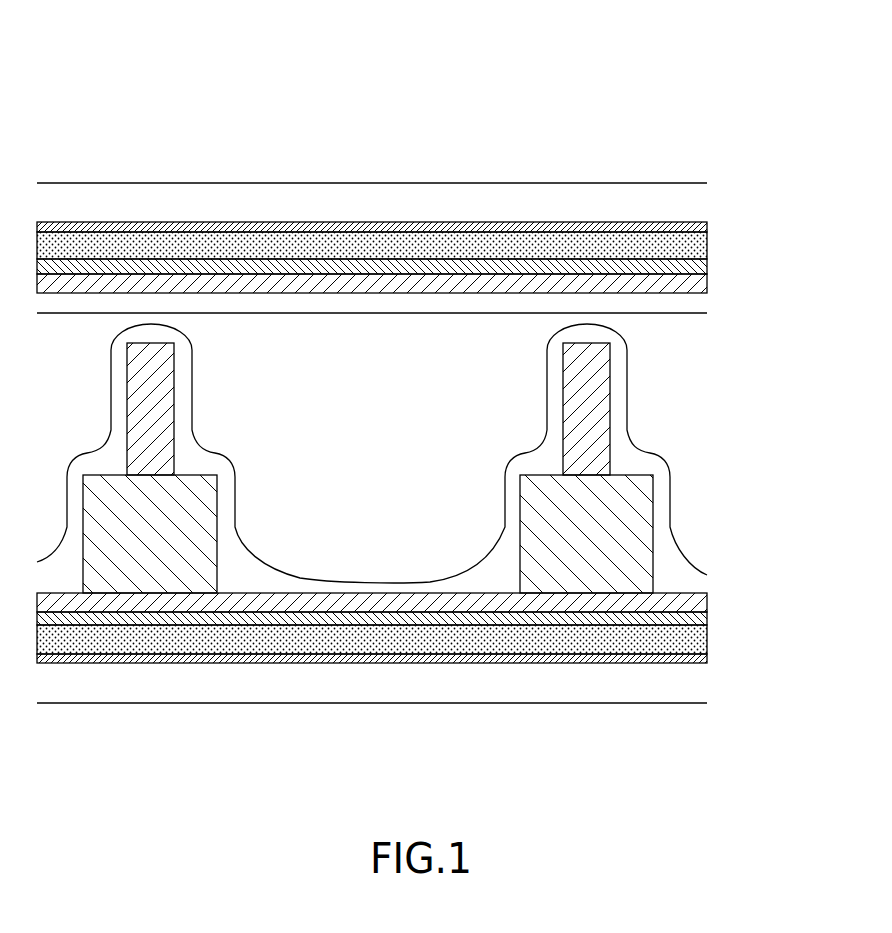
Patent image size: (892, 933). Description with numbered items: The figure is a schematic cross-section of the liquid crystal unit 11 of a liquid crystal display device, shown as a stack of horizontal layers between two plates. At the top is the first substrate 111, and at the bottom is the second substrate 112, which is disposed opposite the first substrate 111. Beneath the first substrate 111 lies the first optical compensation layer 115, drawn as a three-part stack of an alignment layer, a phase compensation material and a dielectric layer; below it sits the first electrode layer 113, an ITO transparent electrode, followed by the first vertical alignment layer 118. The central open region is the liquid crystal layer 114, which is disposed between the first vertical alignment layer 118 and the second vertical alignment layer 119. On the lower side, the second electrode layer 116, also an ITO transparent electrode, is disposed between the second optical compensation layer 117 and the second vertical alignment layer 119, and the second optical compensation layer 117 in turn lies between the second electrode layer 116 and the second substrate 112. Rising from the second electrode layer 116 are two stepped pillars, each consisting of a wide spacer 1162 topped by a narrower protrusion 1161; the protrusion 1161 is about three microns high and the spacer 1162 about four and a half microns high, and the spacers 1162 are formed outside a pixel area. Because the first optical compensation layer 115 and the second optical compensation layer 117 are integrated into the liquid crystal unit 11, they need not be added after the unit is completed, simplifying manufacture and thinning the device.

The liquid crystal unit 11 is at (188, 54).
The first substrate 111 is at (692, 198).
The second substrate 112 is at (692, 690).
The first electrode layer 113 is at (690, 283).
The liquid crystal layer 114 is at (283, 379).
The first optical compensation layer 115 is at (437, 240).
The second electrode layer 116 is at (697, 605).
The protrusion 1161 is at (603, 404).
The spacer 1162 is at (618, 527).
The second optical compensation layer 117 is at (437, 647).
The first vertical alignment layer 118 is at (692, 305).
The second vertical alignment layer 119 is at (460, 585).